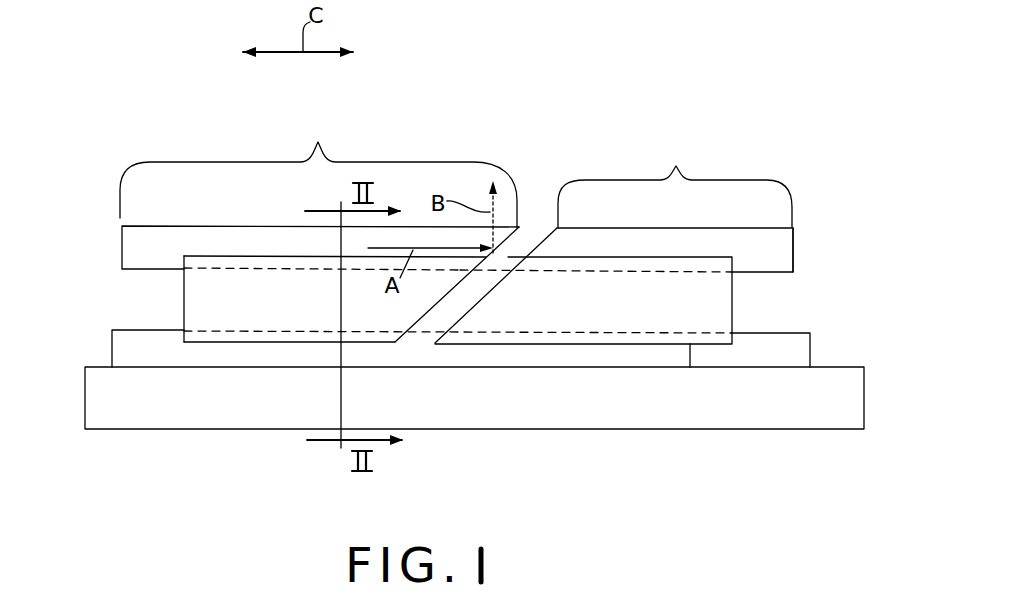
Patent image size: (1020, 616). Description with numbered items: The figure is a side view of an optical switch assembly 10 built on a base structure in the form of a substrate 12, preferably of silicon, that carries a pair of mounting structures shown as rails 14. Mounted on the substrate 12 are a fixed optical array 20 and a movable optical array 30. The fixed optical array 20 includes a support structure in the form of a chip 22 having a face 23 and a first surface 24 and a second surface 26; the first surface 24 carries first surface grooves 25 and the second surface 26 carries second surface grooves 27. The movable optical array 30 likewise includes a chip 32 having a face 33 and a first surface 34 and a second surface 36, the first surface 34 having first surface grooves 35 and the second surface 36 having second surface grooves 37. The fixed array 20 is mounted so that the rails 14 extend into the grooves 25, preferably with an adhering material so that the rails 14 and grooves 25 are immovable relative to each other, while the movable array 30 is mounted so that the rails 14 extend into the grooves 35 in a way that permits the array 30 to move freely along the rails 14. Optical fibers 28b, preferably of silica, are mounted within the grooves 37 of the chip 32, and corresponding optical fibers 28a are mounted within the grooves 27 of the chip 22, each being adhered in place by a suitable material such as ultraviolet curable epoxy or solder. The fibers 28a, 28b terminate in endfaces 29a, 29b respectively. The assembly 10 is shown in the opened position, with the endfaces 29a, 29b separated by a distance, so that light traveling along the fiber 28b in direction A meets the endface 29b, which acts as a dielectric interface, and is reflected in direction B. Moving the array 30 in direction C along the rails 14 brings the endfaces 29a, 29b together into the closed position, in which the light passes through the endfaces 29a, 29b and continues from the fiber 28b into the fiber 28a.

The optical switch assembly 10 is at (745, 113).
The substrate 12 is at (608, 410).
The rails 14 is at (795, 349).
The fixed optical array 20 is at (676, 166).
The chip 22 is at (710, 307).
The face 23 is at (492, 292).
The first surface 24 is at (690, 368).
The first surface grooves 25 is at (730, 348).
The second surface 26 is at (707, 258).
The second surface grooves 27 is at (657, 272).
The optical fibers 28a is at (790, 235).
The optical fibers 28b is at (142, 242).
The endfaces 29a is at (535, 248).
The endfaces 29b is at (512, 245).
The movable optical array 30 is at (318, 142).
The chip 32 is at (208, 290).
The face 33 is at (428, 310).
The first surface 34 is at (233, 343).
The first surface grooves 35 is at (185, 334).
The second surface 36 is at (243, 255).
The second surface grooves 37 is at (202, 267).